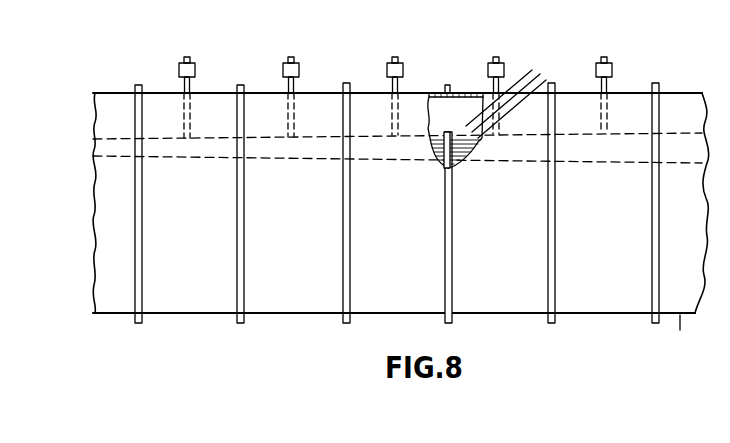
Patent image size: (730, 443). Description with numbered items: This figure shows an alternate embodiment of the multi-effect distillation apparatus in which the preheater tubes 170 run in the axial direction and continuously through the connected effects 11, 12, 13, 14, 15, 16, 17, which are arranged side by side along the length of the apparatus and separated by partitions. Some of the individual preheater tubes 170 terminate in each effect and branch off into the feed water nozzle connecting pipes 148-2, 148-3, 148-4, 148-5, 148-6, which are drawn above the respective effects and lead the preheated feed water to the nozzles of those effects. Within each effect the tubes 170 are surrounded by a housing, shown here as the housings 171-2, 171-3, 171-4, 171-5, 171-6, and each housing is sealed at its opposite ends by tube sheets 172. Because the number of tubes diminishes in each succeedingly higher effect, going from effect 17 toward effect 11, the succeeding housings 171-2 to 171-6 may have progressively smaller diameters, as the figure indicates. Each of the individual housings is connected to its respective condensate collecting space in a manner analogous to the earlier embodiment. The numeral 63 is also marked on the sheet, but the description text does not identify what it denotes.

The effect 11 is at (123, 315).
The effect 12 is at (208, 315).
The effect 13 is at (300, 315).
The effect 14 is at (410, 315).
The effect 15 is at (485, 315).
The effect 16 is at (587, 315).
The effect 17 is at (680, 315).
The conduit 63 is at (100, 0).
The feed water nozzle connecting pipe 148-2 is at (192, 86).
The feed water nozzle connecting pipe 148-3 is at (297, 88).
The feed water nozzle connecting pipe 148-4 is at (402, 83).
The feed water nozzle connecting pipe 148-5 is at (500, 82).
The feed water nozzle connecting pipe 148-6 is at (613, 82).
The preheater tubes 170 is at (497, 111).
The housing 171-2 is at (208, 160).
The housing 171-3 is at (302, 160).
The housing 171-4 is at (408, 160).
The housing 171-5 is at (510, 163).
The housing 171-6 is at (617, 163).
The tube sheet 172 is at (448, 132).